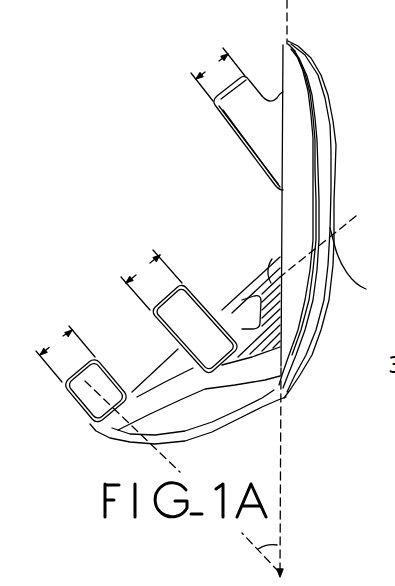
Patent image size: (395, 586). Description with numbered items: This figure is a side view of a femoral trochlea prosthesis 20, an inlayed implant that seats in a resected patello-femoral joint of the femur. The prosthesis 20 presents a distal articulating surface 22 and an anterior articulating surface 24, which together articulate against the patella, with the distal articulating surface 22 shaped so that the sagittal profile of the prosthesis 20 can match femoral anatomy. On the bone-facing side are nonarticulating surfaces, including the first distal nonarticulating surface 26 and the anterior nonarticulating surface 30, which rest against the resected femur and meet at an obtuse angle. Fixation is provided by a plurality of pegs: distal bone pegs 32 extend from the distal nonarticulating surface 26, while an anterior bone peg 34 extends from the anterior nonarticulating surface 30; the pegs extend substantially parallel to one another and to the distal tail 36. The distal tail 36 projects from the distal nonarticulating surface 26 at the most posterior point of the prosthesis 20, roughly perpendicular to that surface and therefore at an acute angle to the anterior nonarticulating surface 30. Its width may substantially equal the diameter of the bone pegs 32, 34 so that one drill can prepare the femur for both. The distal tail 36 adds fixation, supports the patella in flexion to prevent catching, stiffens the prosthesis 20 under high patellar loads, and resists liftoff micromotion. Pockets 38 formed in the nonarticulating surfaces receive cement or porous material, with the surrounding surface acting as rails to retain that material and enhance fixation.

The femoral trochlea prosthesis 20 is at (113, 135).
The distal articulating surface 22 is at (193, 445).
The anterior articulating surface 24 is at (332, 185).
The first distal nonarticulating surface 26 is at (257, 328).
The anterior nonarticulating surface 30 is at (278, 203).
The distal bone pegs 32 is at (203, 304).
The anterior bone peg 34 is at (262, 94).
The distal tail 36 is at (84, 397).
The pockets 38 is at (154, 452).